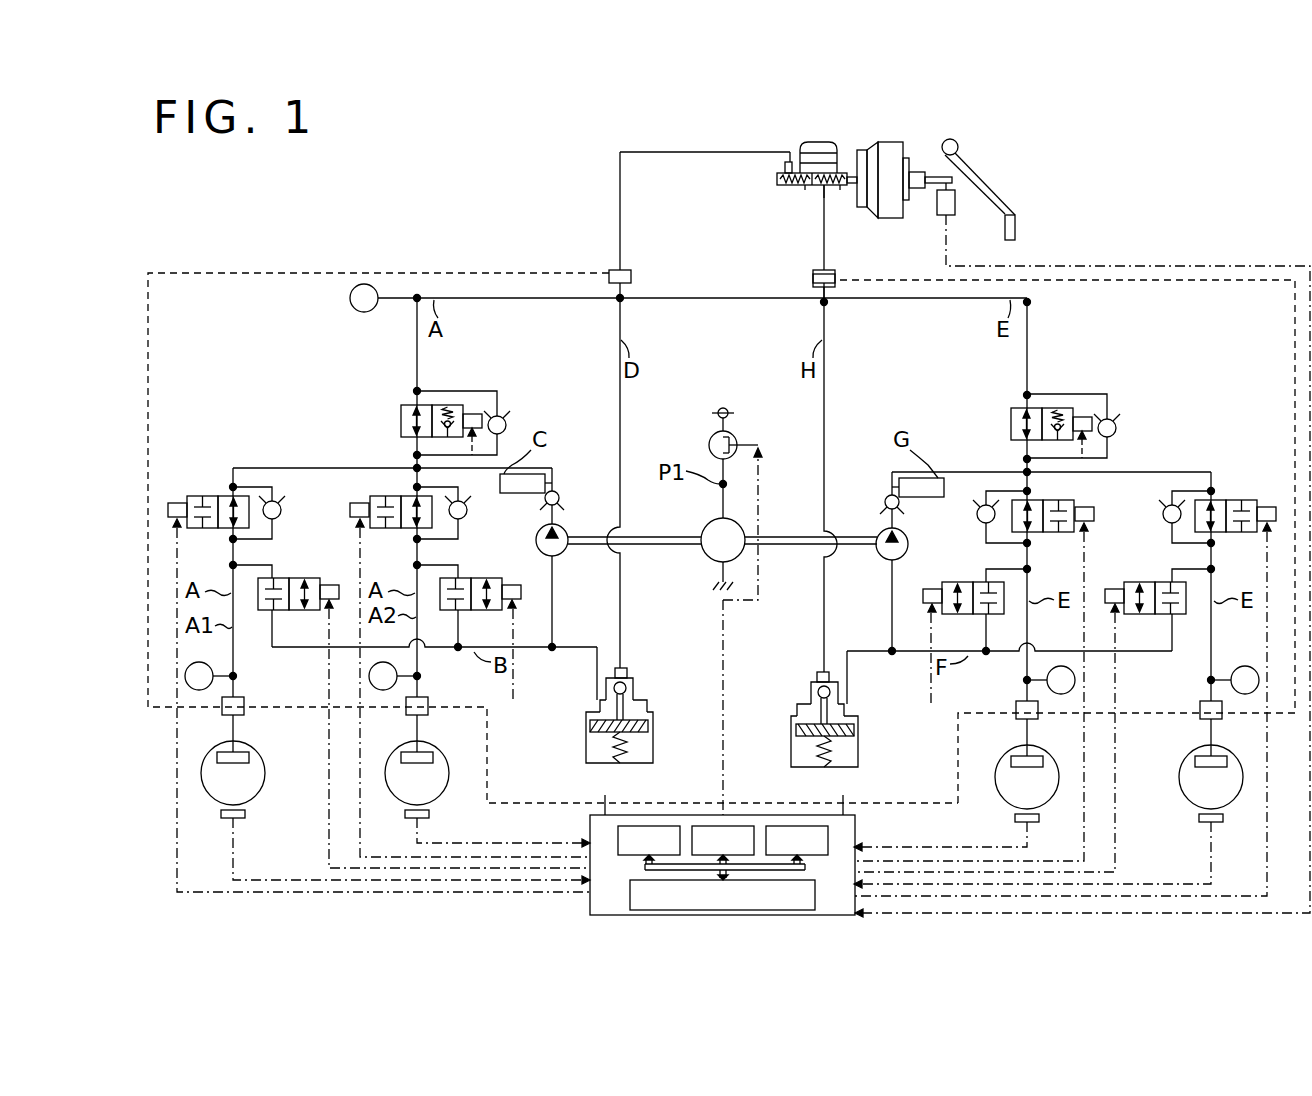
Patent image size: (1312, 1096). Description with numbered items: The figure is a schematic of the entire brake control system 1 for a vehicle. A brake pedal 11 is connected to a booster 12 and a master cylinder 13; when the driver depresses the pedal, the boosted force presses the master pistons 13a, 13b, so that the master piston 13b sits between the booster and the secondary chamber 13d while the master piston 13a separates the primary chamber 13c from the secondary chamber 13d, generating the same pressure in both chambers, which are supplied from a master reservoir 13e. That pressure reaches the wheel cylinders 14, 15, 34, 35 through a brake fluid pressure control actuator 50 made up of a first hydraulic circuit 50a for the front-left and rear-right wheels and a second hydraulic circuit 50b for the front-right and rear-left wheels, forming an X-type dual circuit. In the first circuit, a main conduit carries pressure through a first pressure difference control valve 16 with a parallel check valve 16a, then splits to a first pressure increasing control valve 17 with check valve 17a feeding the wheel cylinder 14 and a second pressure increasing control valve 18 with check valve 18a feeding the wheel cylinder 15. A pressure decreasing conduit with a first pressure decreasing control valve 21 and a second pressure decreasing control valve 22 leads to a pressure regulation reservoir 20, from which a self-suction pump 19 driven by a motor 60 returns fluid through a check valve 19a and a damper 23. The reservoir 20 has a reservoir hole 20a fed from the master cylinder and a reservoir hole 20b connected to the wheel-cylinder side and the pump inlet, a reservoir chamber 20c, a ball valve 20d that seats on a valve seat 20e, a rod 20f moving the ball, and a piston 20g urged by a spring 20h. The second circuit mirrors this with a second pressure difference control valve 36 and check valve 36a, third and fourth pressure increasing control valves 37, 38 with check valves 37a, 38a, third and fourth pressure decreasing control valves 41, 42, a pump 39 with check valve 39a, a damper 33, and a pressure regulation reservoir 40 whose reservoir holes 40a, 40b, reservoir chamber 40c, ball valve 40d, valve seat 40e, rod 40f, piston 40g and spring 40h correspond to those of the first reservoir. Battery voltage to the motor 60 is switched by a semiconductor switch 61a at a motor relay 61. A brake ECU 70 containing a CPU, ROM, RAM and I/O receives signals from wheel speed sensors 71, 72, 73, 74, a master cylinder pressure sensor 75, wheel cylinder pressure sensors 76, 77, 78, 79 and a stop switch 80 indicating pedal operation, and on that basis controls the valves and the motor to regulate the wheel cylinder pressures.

The brake control system 1 is at (1080, 171).
The brake pedal 11 is at (963, 162).
The booster 12 is at (888, 142).
The master cylinder 13 is at (772, 180).
The master piston 13a is at (810, 188).
The master piston 13b is at (843, 190).
The primary chamber 13c is at (788, 188).
The secondary chamber 13d is at (828, 190).
The master reservoir 13e is at (818, 142).
The wheel cylinder 14 is at (217, 757).
The wheel cylinder 15 is at (401, 757).
The first pressure difference control valve 16 is at (400, 421).
The check valve 16a is at (496, 416).
The first pressure increasing control valve 17 is at (222, 496).
The check valve 17a is at (284, 503).
The second pressure increasing control valve 18 is at (395, 496).
The check valve 18a is at (468, 512).
The self-suction pump 19 is at (536, 540).
The check valve 19a is at (559, 494).
The pressure regulation reservoir 20 is at (619, 704).
The reservoir hole 20a is at (622, 666).
The reservoir hole 20b is at (596, 702).
The reservoir chamber 20c is at (586, 720).
The ball valve 20d is at (628, 684).
The valve seat 20e is at (633, 694).
The rod 20f is at (642, 711).
The piston 20g is at (648, 726).
The spring 20h is at (634, 748).
The first pressure decreasing control valve 21 is at (278, 578).
The second pressure decreasing control valve 22 is at (472, 578).
The damper 23 is at (545, 474).
The damper 33 is at (899, 478).
The wheel cylinder 34 is at (1227, 763).
The wheel cylinder 35 is at (1043, 763).
The second pressure difference control valve 36 is at (1011, 426).
The check valve 36a is at (1107, 419).
The third pressure increasing control valve 37 is at (1222, 500).
The check valve 37a is at (1160, 506).
The fourth pressure increasing control valve 38 is at (1049, 500).
The check valve 38a is at (977, 514).
The pump 39 is at (910, 545).
The check valve 39a is at (884, 494).
The pressure regulation reservoir 40 is at (830, 704).
The reservoir hole 40a is at (822, 666).
The reservoir hole 40b is at (849, 702).
The reservoir chamber 40c is at (860, 720).
The ball valve 40d is at (816, 684).
The valve seat 40e is at (811, 694).
The rod 40f is at (802, 711).
The piston 40g is at (796, 726).
The spring 40h is at (810, 748).
The third pressure decreasing control valve 41 is at (1170, 582).
The fourth pressure decreasing control valve 42 is at (975, 582).
The brake fluid pressure control actuator 50 is at (1280, 280).
The first hydraulic circuit 50a is at (218, 325).
The second hydraulic circuit 50b is at (1226, 330).
The motor 60 is at (702, 530).
The motor relay 61 is at (711, 436).
The semiconductor switch 61a is at (736, 440).
The brake ECU 70 is at (857, 824).
The wheel speed sensor 71 is at (246, 814).
The wheel speed sensor 72 is at (430, 814).
The wheel speed sensor 73 is at (1013, 818).
The wheel speed sensor 74 is at (1197, 818).
The master cylinder pressure sensor 75 is at (365, 312).
The wheel cylinder pressure sensor 76 is at (236, 676).
The wheel cylinder pressure sensor 77 is at (420, 676).
The wheel cylinder pressure sensor 78 is at (1247, 668).
The wheel cylinder pressure sensor 79 is at (1062, 668).
The stop switch 80 is at (940, 208).